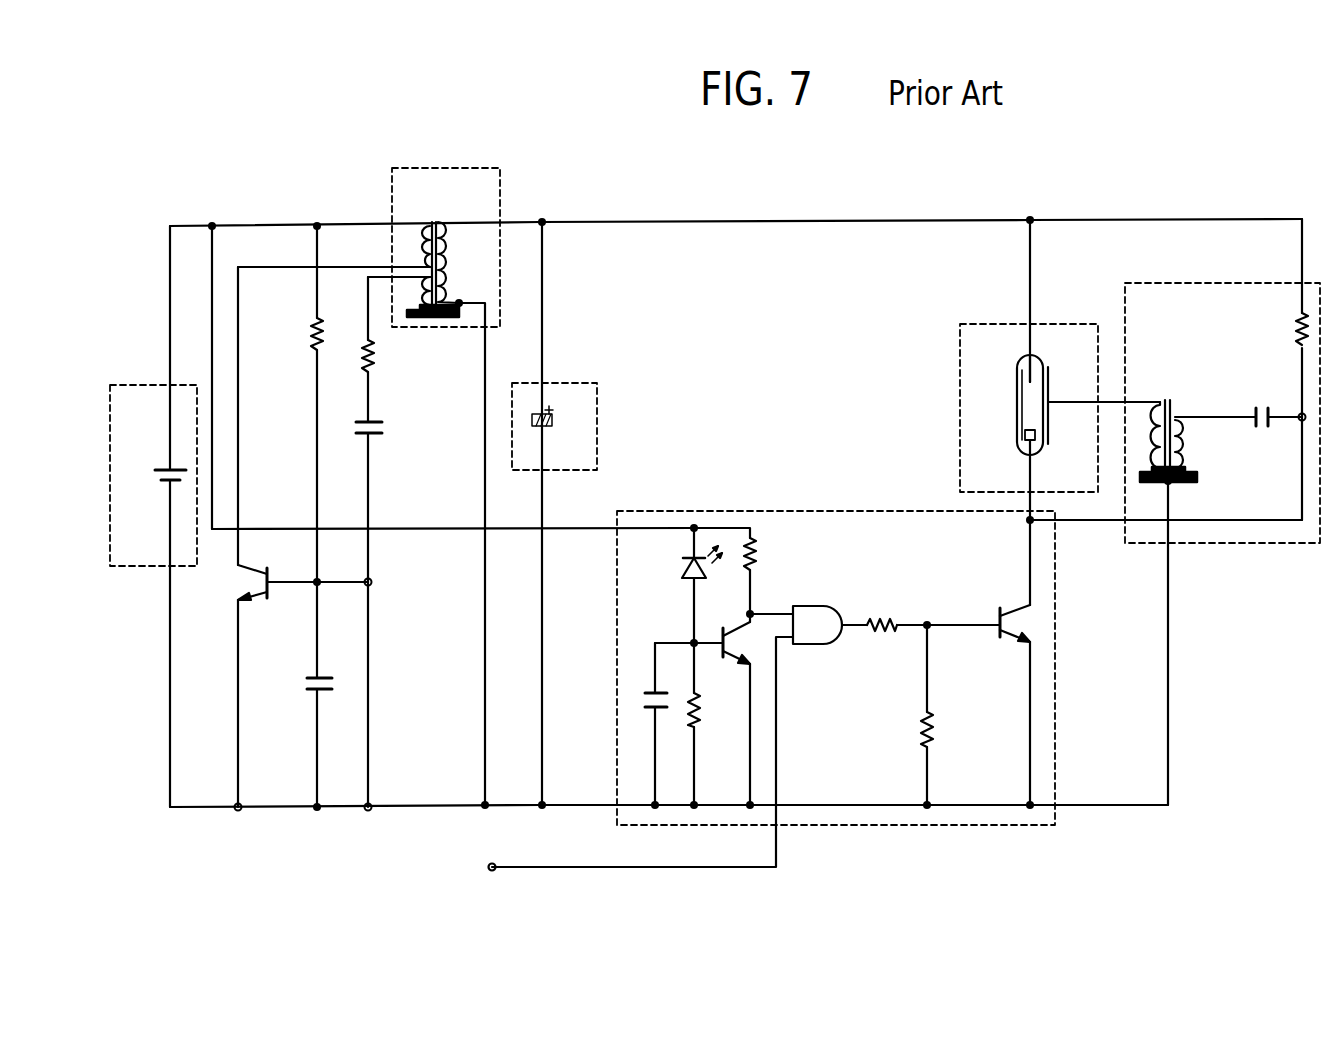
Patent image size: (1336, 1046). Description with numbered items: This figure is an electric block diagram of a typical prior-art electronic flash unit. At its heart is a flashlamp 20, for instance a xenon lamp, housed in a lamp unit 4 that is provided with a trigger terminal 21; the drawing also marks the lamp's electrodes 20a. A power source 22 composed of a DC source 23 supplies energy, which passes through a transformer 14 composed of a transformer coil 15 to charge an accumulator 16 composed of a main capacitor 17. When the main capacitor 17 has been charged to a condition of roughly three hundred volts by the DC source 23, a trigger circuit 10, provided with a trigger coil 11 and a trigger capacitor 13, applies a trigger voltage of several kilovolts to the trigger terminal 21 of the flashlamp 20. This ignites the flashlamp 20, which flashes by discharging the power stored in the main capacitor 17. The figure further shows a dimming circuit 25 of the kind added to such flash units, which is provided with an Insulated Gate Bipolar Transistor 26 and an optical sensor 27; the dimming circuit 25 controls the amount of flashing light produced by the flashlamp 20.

The lamp unit 4 is at (1045, 324).
The trigger circuit 10 is at (1190, 283).
The trigger coil 11 is at (1168, 398).
The trigger capacitor 13 is at (1262, 398).
The transformer 14 is at (440, 168).
The transformer coil 15 is at (450, 278).
The accumulator 16 is at (565, 383).
The main capacitor 17 is at (553, 420).
The flashlamp 20 is at (1014, 390).
The discharge electrodes 20a is at (1040, 368).
The trigger terminal 21 is at (1050, 420).
The power source 22 is at (150, 385).
The DC source 23 is at (165, 482).
The dimming circuit 25 is at (845, 511).
The Insulated Gate Bipolar Transistor (IGBT) 26 is at (1007, 652).
The optical sensor 27 is at (680, 567).